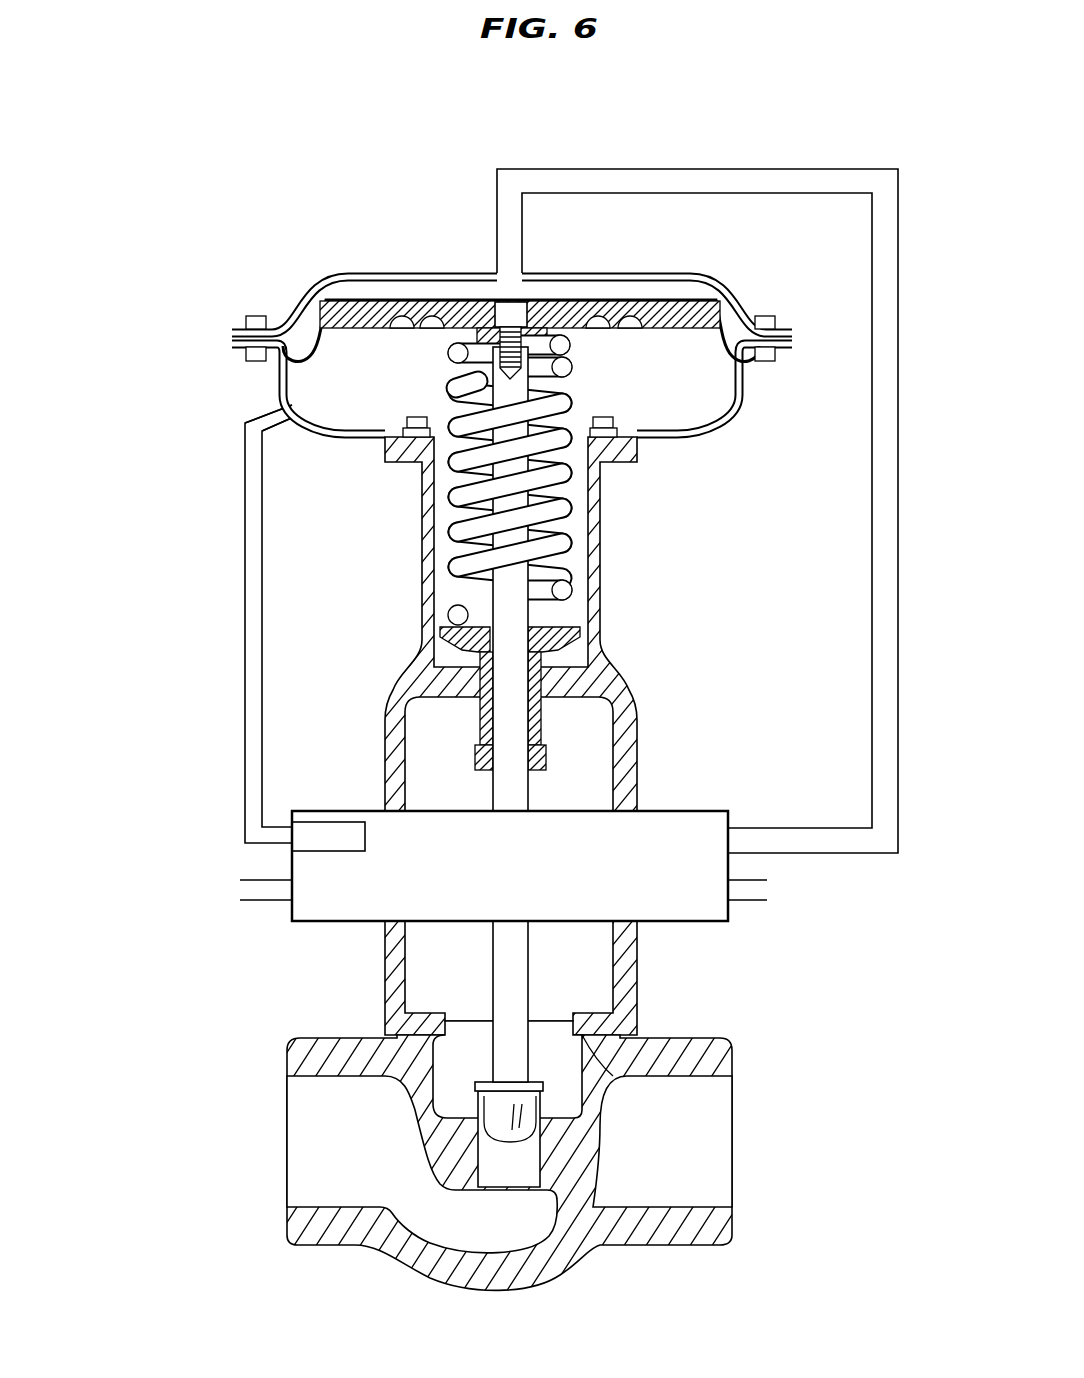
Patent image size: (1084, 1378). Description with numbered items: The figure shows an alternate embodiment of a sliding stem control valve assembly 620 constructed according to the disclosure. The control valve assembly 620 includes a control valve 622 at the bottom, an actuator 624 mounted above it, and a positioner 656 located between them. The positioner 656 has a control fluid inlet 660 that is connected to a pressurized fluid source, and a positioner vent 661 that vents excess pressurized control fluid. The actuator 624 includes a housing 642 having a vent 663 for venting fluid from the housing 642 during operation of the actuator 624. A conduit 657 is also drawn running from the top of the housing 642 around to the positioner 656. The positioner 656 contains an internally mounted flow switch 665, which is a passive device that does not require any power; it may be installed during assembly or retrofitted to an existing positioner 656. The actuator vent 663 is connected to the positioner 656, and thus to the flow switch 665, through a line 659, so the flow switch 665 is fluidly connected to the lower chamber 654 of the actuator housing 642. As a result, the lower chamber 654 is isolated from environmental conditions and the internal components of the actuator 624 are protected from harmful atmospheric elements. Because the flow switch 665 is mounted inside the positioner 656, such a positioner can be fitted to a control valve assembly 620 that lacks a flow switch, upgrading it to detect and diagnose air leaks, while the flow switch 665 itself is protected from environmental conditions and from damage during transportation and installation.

The control valve assembly 620 is at (152, 350).
The control valve 622 is at (786, 1046).
The actuator 624 is at (288, 200).
The housing 642 is at (620, 275).
The lower chamber 654 is at (711, 405).
The positioner 656 is at (714, 750).
The pressure conduit 657 is at (822, 165).
The line 659 is at (243, 679).
The control fluid inlet 660 is at (745, 905).
The positioner vent 661 is at (257, 905).
The vent 663 is at (288, 410).
The flow switch 665 is at (323, 851).